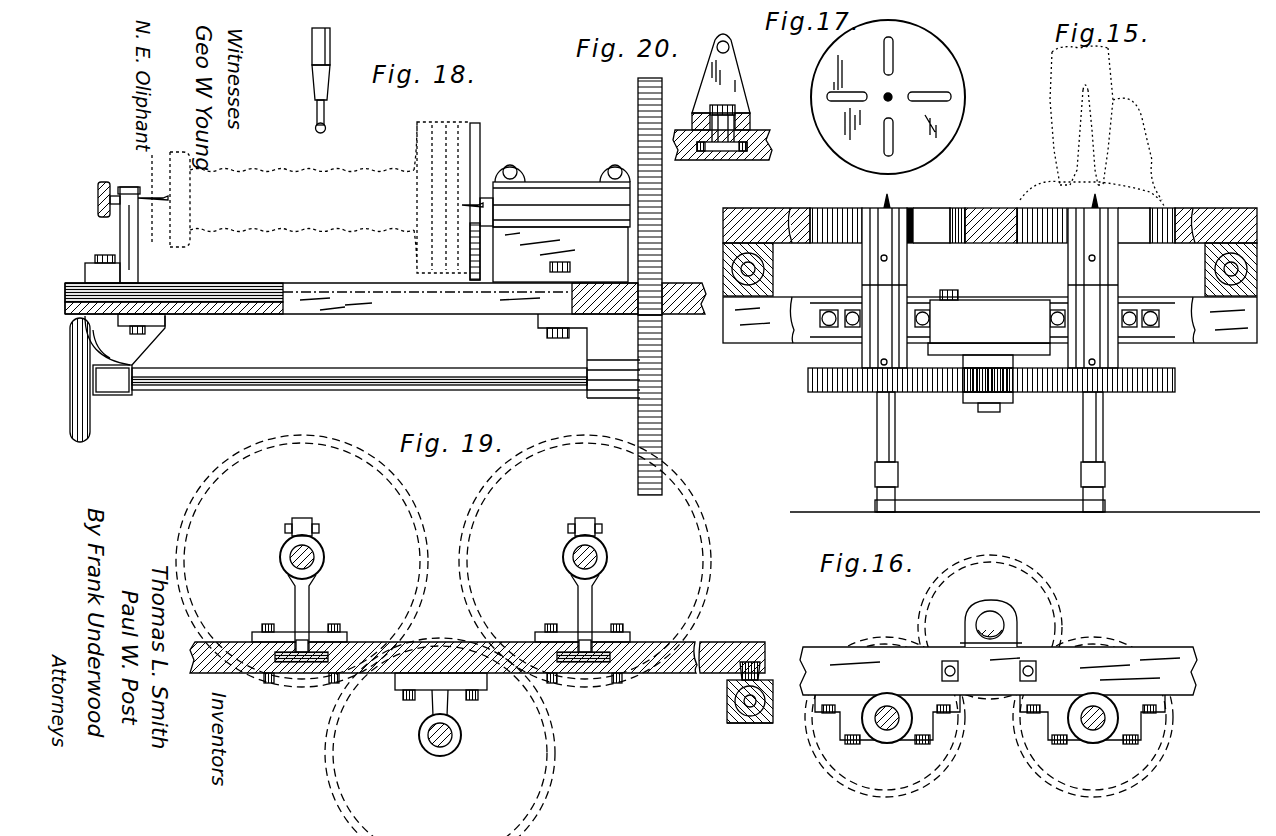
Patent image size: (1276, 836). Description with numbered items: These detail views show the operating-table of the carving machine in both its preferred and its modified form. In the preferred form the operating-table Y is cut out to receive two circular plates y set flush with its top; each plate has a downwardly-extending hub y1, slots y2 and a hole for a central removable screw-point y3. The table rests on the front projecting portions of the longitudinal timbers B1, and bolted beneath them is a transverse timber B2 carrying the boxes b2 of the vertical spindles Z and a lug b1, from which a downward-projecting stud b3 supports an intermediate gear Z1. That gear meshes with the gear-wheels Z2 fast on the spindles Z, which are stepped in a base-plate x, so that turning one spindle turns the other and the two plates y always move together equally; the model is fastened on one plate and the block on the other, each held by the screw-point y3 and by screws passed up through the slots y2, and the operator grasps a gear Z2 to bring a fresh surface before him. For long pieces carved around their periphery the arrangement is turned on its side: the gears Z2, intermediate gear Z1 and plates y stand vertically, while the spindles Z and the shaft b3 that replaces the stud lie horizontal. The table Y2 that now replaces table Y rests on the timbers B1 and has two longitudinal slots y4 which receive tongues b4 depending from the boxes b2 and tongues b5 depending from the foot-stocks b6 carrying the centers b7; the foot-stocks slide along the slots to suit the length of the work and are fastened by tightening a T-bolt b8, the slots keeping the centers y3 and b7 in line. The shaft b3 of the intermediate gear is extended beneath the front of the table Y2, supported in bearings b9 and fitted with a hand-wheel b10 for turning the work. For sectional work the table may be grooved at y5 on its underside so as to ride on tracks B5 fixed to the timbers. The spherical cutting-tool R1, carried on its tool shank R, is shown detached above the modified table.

In FIG. 18, the tool shank R is at (331, 43).
In FIG. 18, the cutting-tool R1 is at (326, 115).
In FIG. 18, the lug b1 is at (596, 348).
In FIG. 15, the lug b1 is at (975, 352).
In FIG. 19, the lug b1 is at (448, 694).
In FIG. 16, the lug b1 is at (1018, 636).
In FIG. 18, the boxes b2 is at (553, 190).
In FIG. 15, the boxes b2 is at (990, 288).
In FIG. 19, the boxes b2 is at (313, 608).
In FIG. 16, the boxes b2 is at (853, 724).
In FIG. 18, the stud b3 is at (447, 374).
In FIG. 15, the stud b3 is at (984, 407).
In FIG. 19, the stud b3 is at (453, 740).
In FIG. 16, the stud b3 is at (992, 626).
In FIG. 19, the tongues b4 is at (300, 641).
In FIG. 18, the tongues b5 is at (86, 266).
In FIG. 20, the tongues b5 is at (733, 152).
In FIG. 18, the foot-stocks b6 is at (139, 251).
In FIG. 20, the foot-stocks b6 is at (738, 80).
In FIG. 18, the centers b7 is at (126, 190).
In FIG. 18, the T-bolt b8 is at (120, 325).
In FIG. 20, the T-bolt b8 is at (750, 125).
In FIG. 18, the bearings b9 is at (142, 346).
In FIG. 18, the hand-wheel b10 is at (90, 432).
In FIG. 18, the circular plates y is at (481, 141).
In FIG. 17, the circular plates y is at (961, 72).
In FIG. 15, the circular plates y is at (941, 208).
In FIG. 18, the hubs y1 is at (488, 192).
In FIG. 17, the slots y2 is at (886, 149).
In FIG. 18, the screw-points y3 is at (462, 206).
In FIG. 17, the screw-points y3 is at (891, 94).
In FIG. 15, the screw-points y3 is at (890, 201).
In FIG. 18, the longitudinal slots y4 is at (251, 284).
In FIG. 19, the longitudinal slots y4 is at (305, 664).
In FIG. 19, the groove y5 is at (757, 662).
In FIG. 15, the operating-table Y is at (1222, 222).
In FIG. 18, the table Y2 is at (449, 306).
In FIG. 20, the table Y2 is at (770, 160).
In FIG. 19, the table Y2 is at (662, 673).
In FIG. 15, the spindles Z is at (896, 440).
In FIG. 19, the spindles Z is at (314, 558).
In FIG. 16, the spindles Z is at (889, 727).
In FIG. 18, the intermediate gear Z1 is at (660, 414).
In FIG. 15, the intermediate gear Z1 is at (1003, 383).
In FIG. 19, the intermediate gear Z1 is at (332, 749).
In FIG. 16, the intermediate gear Z1 is at (1050, 596).
In FIG. 18, the gear-wheels Z2 is at (655, 197).
In FIG. 15, the gear-wheels Z2 is at (836, 392).
In FIG. 19, the gear-wheels Z2 is at (182, 509).
In FIG. 16, the gear-wheels Z2 is at (948, 748).
In FIG. 15, the longitudinal timbers B1 is at (775, 269).
In FIG. 19, the longitudinal timbers B1 is at (748, 724).
In FIG. 15, the transverse timber B2 is at (990, 320).
In FIG. 16, the transverse timber B2 is at (1168, 658).
In FIG. 19, the tracks B5 is at (735, 686).
In FIG. 15, the base-plate x is at (1000, 501).